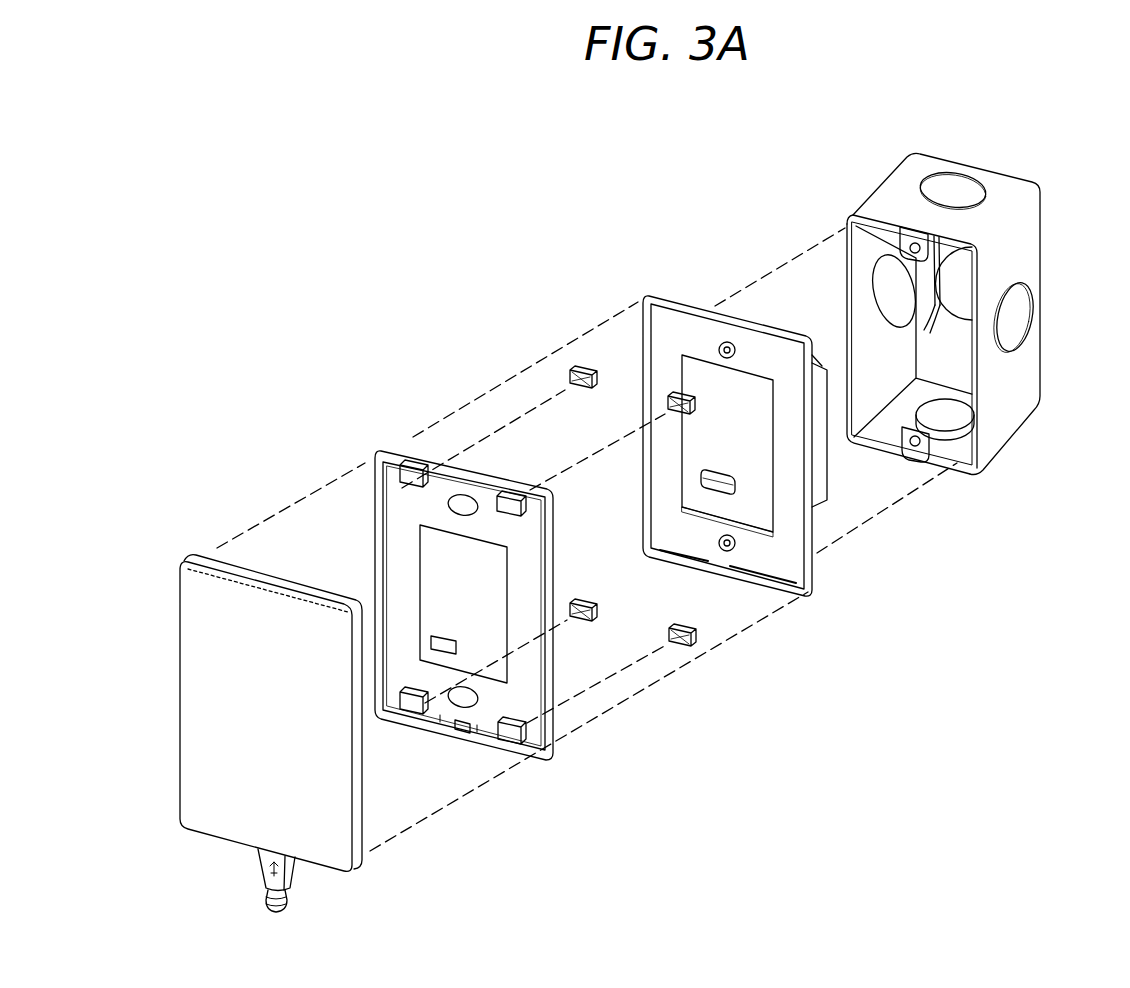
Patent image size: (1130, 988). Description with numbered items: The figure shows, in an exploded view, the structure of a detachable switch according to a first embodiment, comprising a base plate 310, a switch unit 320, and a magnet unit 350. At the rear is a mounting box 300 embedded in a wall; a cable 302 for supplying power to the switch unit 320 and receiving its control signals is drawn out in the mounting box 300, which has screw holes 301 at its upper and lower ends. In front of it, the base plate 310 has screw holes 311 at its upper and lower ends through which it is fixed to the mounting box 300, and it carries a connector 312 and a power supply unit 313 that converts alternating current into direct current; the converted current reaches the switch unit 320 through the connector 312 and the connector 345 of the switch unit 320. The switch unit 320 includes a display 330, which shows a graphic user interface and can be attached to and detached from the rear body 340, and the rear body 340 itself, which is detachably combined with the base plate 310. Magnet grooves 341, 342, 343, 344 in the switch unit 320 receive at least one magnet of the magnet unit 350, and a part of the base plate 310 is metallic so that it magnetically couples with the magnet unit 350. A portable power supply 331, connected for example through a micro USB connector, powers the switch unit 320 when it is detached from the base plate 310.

The mounting box 300 is at (950, 162).
The screw hole 301 is at (907, 236).
The cable 302 is at (942, 286).
The base plate 310 is at (702, 306).
The screw hole 311 is at (729, 348).
The connector 312 is at (722, 473).
The power supply unit 313 is at (823, 474).
The switch unit 320 is at (362, 444).
The display 330 is at (302, 592).
The portable power supply 331 is at (289, 893).
The rear body 340 is at (555, 519).
The magnet groove 341 is at (411, 468).
The magnet groove 342 is at (508, 500).
The magnet groove 343 is at (412, 705).
The magnet groove 344 is at (512, 733).
The connector 345 is at (443, 642).
The magnet unit 350 is at (678, 404).